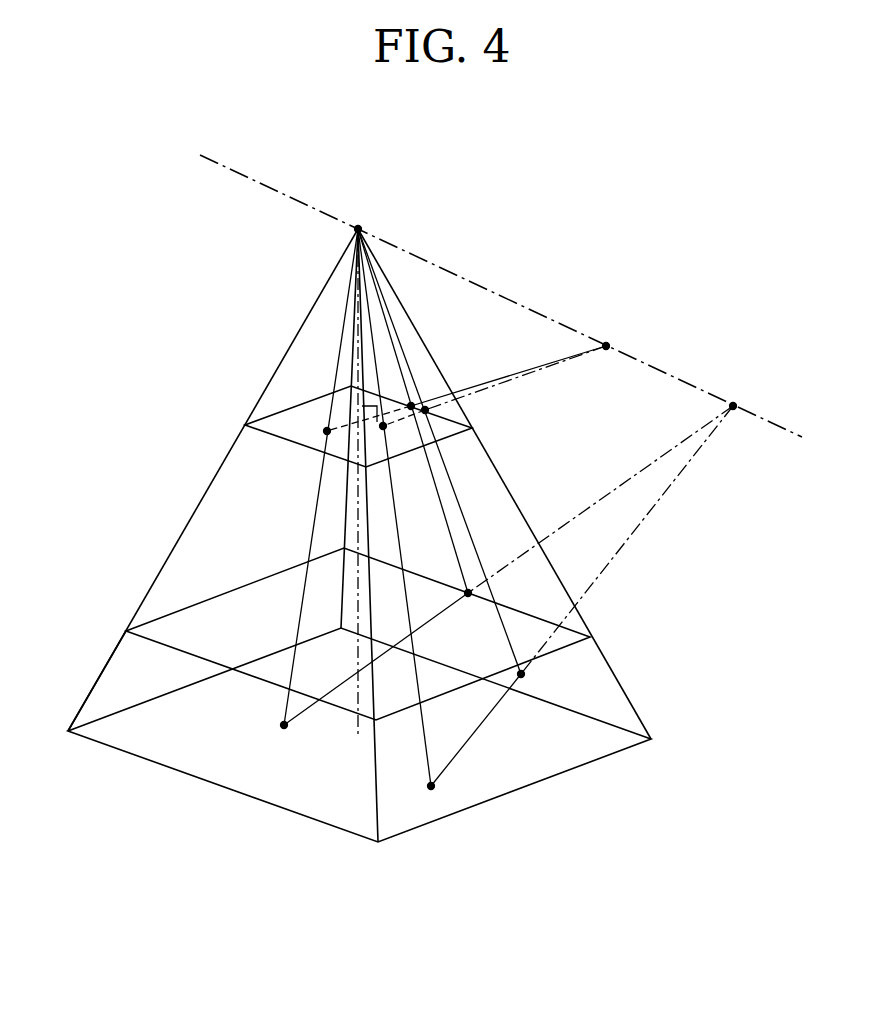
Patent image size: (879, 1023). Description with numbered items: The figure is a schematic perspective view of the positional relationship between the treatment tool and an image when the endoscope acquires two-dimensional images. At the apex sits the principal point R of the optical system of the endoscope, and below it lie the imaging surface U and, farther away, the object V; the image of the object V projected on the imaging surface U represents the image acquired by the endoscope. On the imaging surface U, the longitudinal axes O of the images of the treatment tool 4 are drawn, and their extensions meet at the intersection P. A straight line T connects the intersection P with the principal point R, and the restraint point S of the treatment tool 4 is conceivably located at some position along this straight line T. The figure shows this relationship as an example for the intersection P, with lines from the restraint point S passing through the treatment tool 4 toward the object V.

The principal point R is at (402, 492).
The straight line T is at (441, 268).
The intersection P is at (608, 329).
The restraint point S is at (735, 389).
The longitudinal axes O is at (456, 392).
The treatment tool 4 is at (652, 463).
The imaging surface U is at (275, 412).
The object V is at (113, 623).